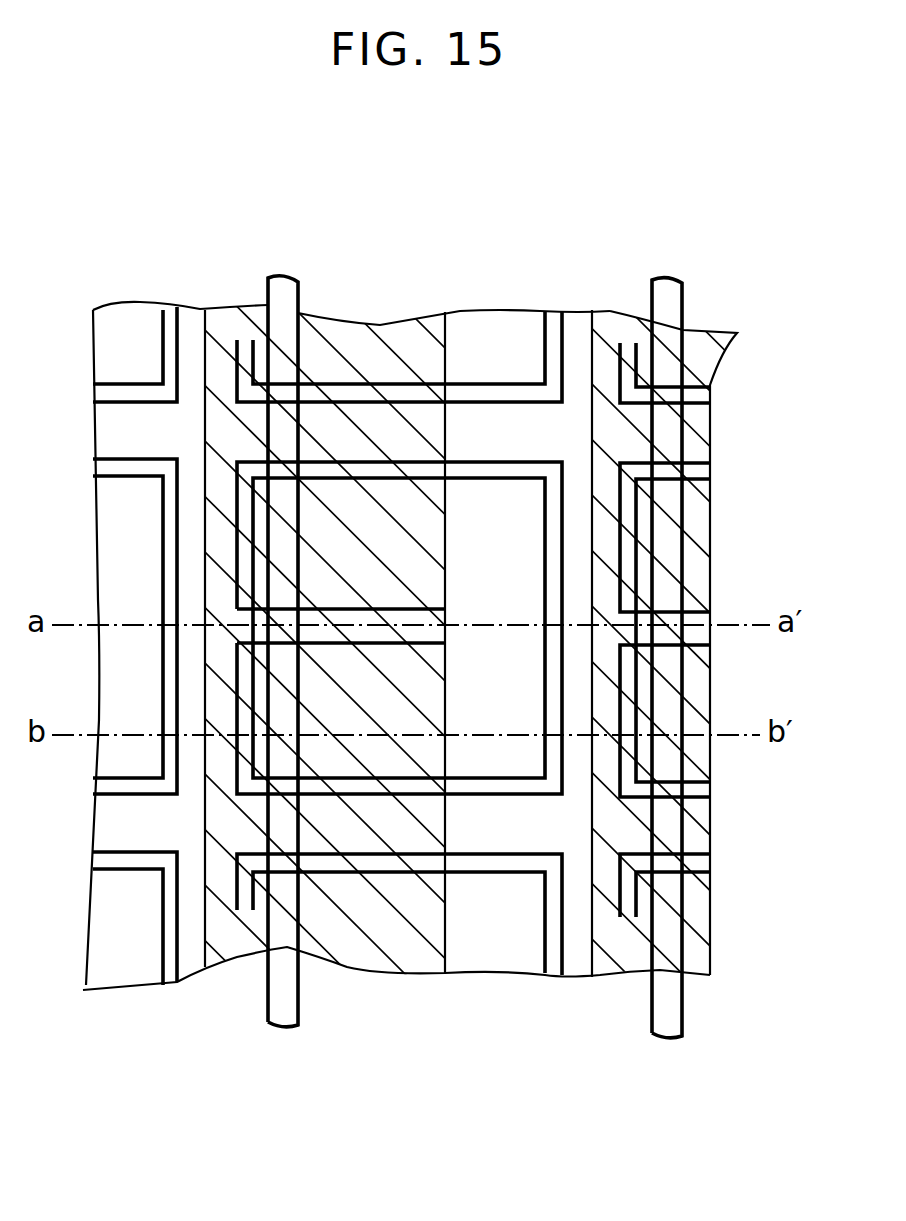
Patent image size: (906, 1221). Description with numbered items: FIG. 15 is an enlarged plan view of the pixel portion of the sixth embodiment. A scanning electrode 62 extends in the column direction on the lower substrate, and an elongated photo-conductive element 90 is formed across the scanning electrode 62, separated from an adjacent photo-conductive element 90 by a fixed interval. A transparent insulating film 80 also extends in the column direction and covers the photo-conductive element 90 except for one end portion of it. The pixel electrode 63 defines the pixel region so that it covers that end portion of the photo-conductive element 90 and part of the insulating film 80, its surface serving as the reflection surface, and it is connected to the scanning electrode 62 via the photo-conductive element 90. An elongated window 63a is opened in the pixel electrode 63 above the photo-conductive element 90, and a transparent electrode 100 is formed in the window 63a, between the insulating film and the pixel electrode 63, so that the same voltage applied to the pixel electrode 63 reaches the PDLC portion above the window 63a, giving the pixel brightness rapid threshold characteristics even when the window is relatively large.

The scanning electrode 62 is at (265, 998).
The pixel electrode 63 is at (523, 460).
The window 63a is at (403, 615).
The transparent insulating film 80 is at (405, 977).
The photo-conductive element 90 is at (481, 417).
The transparent electrode 100 is at (545, 580).